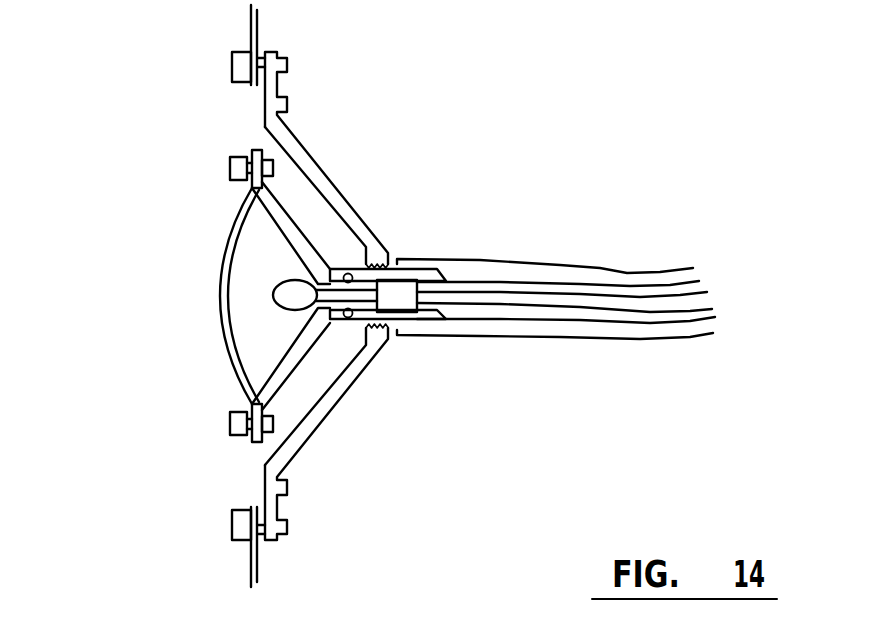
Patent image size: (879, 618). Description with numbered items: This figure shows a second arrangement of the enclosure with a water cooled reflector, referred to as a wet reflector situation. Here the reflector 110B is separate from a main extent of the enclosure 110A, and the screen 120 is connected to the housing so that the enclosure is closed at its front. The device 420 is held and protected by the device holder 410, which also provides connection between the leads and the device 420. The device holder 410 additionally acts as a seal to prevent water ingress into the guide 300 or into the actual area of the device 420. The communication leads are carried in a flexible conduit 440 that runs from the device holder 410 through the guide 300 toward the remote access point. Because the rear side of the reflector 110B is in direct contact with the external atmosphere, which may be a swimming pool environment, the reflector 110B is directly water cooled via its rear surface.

The main extent of the enclosure 110A is at (315, 178).
The reflector 110B is at (308, 252).
The screen 120 is at (225, 343).
The guide 300 is at (523, 268).
The device holder 410 is at (342, 320).
The device 420 is at (282, 292).
The flexible conduit 440 is at (553, 300).